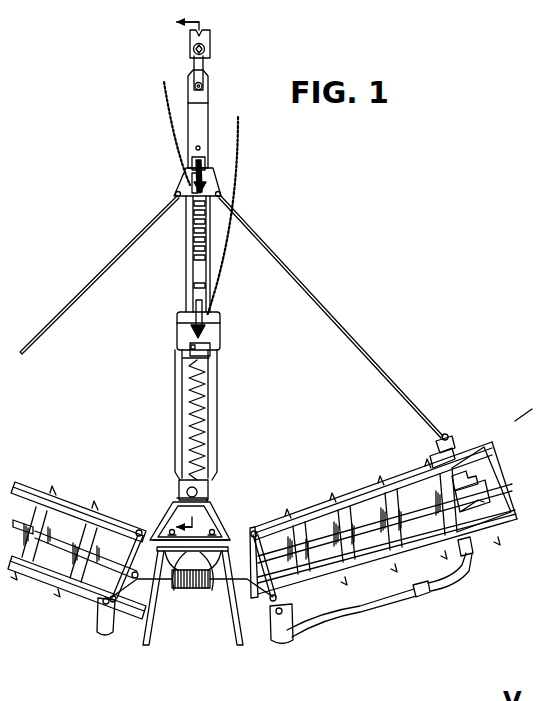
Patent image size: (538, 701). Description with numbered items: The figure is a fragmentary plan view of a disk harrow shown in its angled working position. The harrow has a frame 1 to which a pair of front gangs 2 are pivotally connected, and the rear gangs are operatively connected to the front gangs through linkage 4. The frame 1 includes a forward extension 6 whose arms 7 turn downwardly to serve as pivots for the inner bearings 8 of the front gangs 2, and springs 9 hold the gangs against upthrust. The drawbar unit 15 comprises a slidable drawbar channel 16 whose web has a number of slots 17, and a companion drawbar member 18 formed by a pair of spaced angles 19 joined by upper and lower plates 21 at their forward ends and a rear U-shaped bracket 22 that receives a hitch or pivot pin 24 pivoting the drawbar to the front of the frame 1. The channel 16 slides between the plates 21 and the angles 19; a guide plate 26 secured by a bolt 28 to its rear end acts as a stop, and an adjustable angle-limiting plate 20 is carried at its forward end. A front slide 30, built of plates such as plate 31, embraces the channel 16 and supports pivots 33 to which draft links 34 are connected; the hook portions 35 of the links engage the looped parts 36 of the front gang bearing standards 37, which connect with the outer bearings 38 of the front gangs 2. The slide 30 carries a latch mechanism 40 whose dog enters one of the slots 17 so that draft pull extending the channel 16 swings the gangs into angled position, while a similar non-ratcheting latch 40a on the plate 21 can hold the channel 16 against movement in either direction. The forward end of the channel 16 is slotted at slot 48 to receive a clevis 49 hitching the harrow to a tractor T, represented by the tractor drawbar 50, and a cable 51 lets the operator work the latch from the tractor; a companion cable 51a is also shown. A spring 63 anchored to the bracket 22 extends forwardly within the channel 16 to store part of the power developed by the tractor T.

The frame 1 is at (184, 578).
The front gangs 2 is at (64, 494).
The linkage 4 is at (63, 628).
The forward extension 6 is at (216, 518).
The arms 7 is at (150, 540).
The inner bearings 8 is at (153, 606).
The springs 9 is at (186, 591).
The drawbar unit 15 is at (185, 348).
The drawbar channel 16 is at (204, 117).
The slots 17 is at (186, 250).
The drawbar member 18 is at (221, 397).
The angles 19 is at (178, 416).
The angle-limiting plate 20 is at (203, 141).
The upper and lower plates 21 is at (206, 329).
The U-shaped bracket 22 is at (205, 486).
The hitch or pivot pin 24 is at (183, 486).
The upper guide plate 26 is at (209, 352).
The bolt 28 is at (191, 349).
The front slide 30 is at (226, 181).
The plate 31 is at (208, 180).
The pivots 33 is at (176, 193).
The draft links 34 is at (98, 275).
The hook portions 35 is at (448, 434).
The looped parts 36 is at (443, 433).
The front gang bearing standards 37 is at (462, 480).
The outer bearings 38 is at (478, 492).
The latch mechanism 40 is at (184, 174).
The latch 40a is at (185, 320).
The slot 48 is at (195, 85).
The clevis 49 is at (197, 68).
The tractor drawbar 50 is at (190, 42).
The cable 51 is at (168, 115).
The cable 51a is at (226, 278).
The spring 63 is at (202, 449).
The tractor T is at (199, 52).